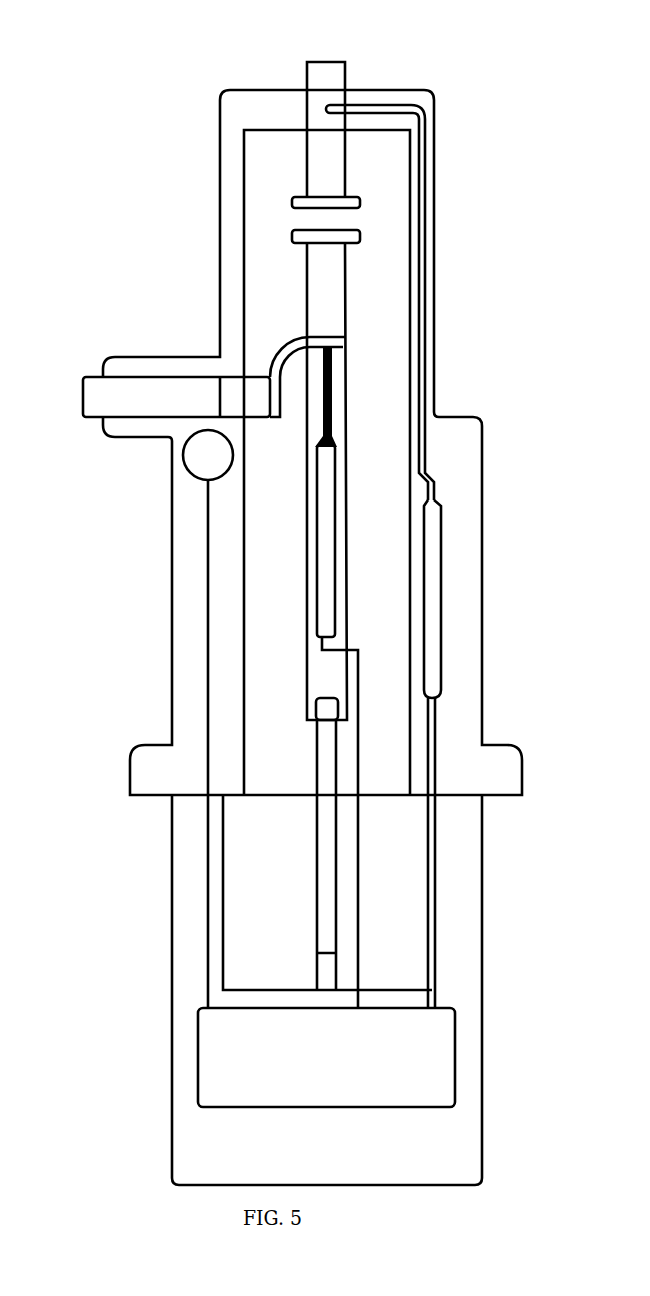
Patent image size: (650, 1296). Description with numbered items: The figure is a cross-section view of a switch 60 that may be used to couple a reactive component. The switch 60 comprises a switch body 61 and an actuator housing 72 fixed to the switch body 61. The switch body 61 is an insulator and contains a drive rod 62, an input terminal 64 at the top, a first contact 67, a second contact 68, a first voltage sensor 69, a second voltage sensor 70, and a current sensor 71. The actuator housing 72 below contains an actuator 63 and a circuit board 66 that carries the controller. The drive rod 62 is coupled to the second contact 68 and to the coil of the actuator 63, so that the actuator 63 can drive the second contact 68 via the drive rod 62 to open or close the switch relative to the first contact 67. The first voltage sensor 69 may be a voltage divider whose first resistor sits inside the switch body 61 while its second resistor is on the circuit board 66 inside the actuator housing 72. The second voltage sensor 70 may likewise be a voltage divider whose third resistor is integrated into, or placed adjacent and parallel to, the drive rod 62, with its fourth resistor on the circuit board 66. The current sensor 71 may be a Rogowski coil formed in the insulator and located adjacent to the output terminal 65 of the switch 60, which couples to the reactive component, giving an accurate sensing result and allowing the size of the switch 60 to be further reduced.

The switch 60 is at (122, 33).
The switch body 61 is at (219, 133).
The drive rod 62 is at (348, 373).
The actuator 63 is at (433, 905).
The input terminal 64 is at (346, 62).
The output terminal 65 is at (83, 396).
The circuit board 66 is at (251, 1108).
The first contact 67 is at (350, 200).
The second contact 68 is at (295, 241).
The first voltage sensor 69 is at (433, 500).
The second voltage sensor 70 is at (334, 483).
The current sensor 71 is at (196, 481).
The actuator housing 72 is at (171, 892).